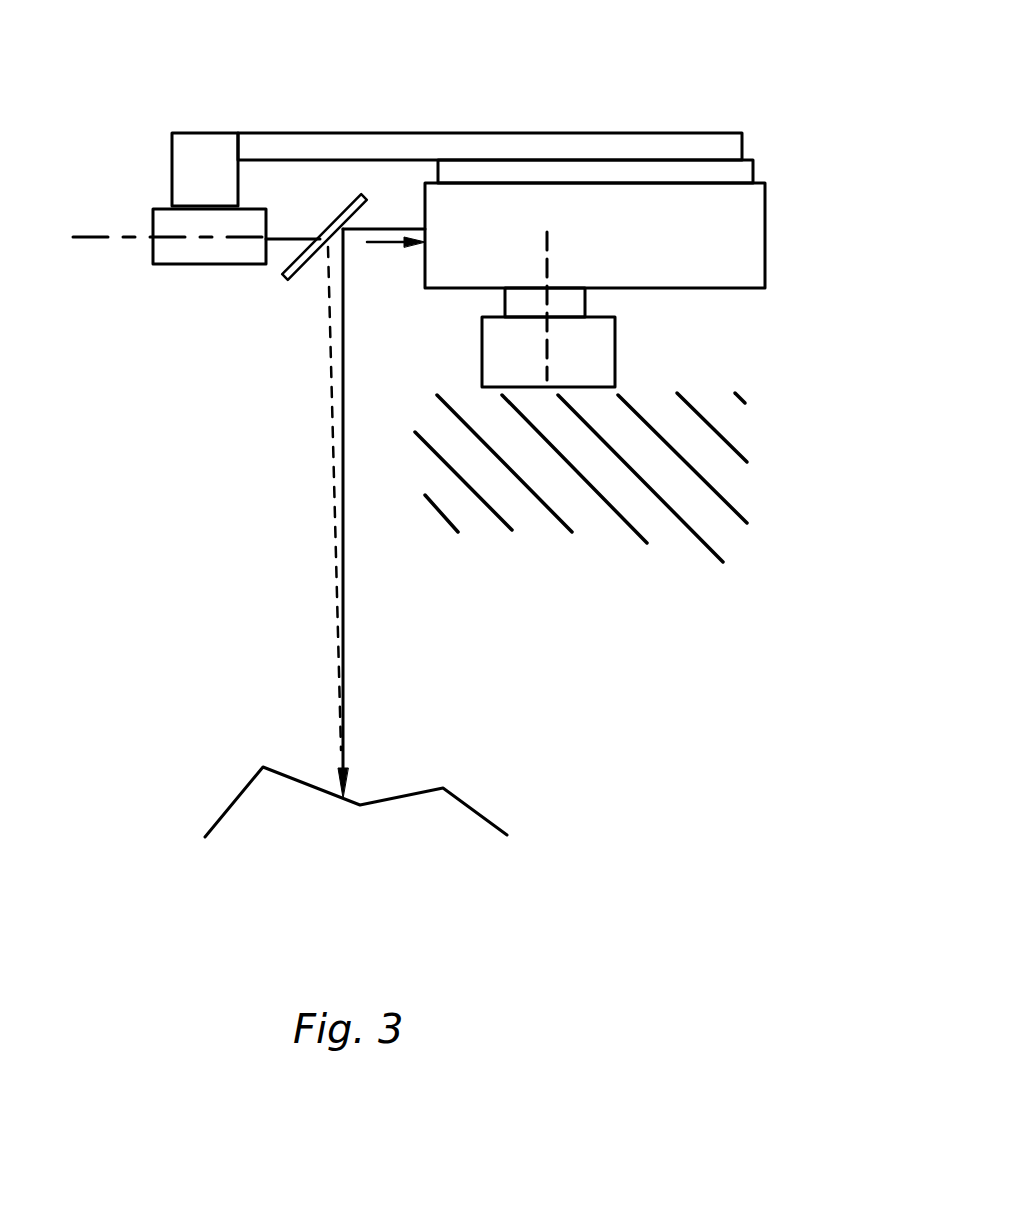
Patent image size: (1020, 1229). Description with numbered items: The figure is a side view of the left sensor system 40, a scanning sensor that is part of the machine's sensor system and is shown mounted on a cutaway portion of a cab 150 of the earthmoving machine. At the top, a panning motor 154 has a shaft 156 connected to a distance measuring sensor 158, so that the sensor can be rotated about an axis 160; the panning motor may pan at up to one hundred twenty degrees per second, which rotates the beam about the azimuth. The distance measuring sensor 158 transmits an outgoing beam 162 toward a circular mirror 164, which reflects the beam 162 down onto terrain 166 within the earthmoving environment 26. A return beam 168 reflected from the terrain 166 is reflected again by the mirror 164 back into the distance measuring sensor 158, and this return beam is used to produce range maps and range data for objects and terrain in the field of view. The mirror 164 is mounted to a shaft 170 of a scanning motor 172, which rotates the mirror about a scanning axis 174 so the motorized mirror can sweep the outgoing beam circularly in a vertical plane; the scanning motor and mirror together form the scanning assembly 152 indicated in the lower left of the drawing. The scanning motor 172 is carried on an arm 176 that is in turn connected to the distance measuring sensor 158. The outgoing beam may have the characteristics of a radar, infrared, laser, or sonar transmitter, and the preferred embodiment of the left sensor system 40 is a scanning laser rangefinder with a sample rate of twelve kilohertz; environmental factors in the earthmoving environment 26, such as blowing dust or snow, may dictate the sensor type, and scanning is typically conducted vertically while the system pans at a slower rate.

The earthmoving environment 26 is at (270, 803).
The left sensor system 40 is at (688, 110).
The cab 150 is at (742, 486).
The laser source assembly 152 is at (167, 300).
The panning motor 154 is at (615, 353).
The shaft 156 is at (585, 302).
The distance measuring sensor 158 is at (766, 242).
The axis 160 is at (543, 358).
The outgoing beam 162 is at (343, 596).
The mirror 164 is at (278, 273).
The terrain 166 is at (463, 800).
The return beam 168 is at (336, 538).
The shaft 170 is at (292, 234).
The scanning motor 172 is at (153, 253).
The scanning axis 174 is at (88, 237).
The arm 176 is at (408, 133).